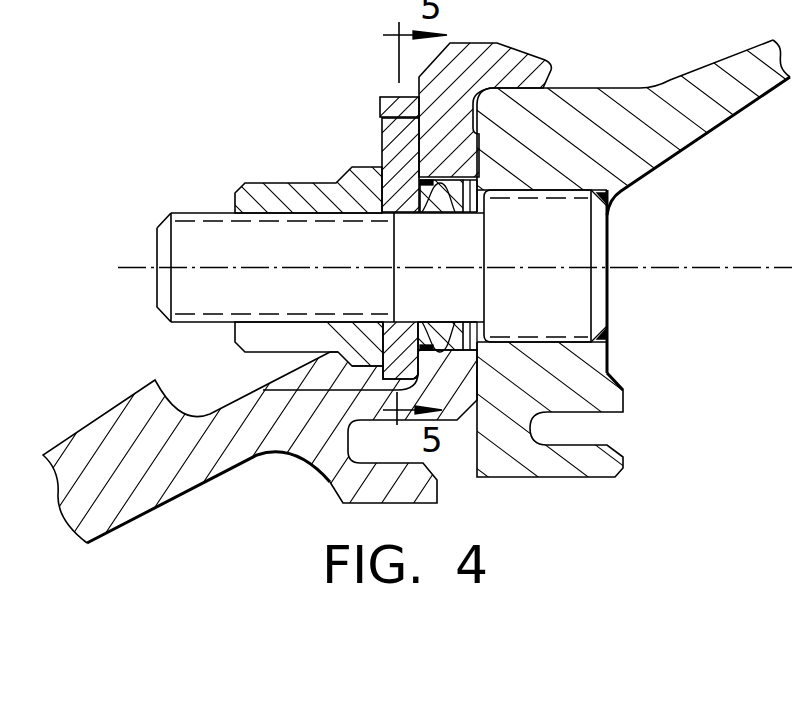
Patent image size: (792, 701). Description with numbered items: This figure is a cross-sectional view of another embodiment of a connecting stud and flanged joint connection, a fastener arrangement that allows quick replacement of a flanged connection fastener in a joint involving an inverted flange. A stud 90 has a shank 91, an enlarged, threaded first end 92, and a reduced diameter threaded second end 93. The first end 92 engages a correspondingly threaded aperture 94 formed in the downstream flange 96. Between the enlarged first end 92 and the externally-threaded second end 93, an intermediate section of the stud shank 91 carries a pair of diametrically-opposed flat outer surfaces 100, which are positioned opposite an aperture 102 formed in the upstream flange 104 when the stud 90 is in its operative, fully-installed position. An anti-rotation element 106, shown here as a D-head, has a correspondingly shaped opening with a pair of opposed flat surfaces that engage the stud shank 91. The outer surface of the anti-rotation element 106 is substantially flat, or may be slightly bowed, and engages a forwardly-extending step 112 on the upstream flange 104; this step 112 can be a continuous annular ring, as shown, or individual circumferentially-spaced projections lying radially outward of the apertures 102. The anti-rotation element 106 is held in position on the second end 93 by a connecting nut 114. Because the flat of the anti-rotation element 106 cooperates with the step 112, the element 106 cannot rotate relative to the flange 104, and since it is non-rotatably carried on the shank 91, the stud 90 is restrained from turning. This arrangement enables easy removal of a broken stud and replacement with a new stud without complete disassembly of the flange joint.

The stud 90 is at (443, 296).
The stud shank 91 is at (408, 257).
The enlarged threaded first end 92 is at (563, 237).
The reduced diameter threaded second end 93 is at (192, 240).
The threaded aperture 94 is at (538, 343).
The downstream flange 96 is at (577, 123).
The flat outer surfaces 100 is at (452, 190).
The aperture 102 is at (425, 200).
The upstream flange 104 is at (533, 68).
The anti-rotation element 106 is at (387, 147).
The forwardly-extending step 112 is at (382, 107).
The connecting nut 114 is at (257, 192).